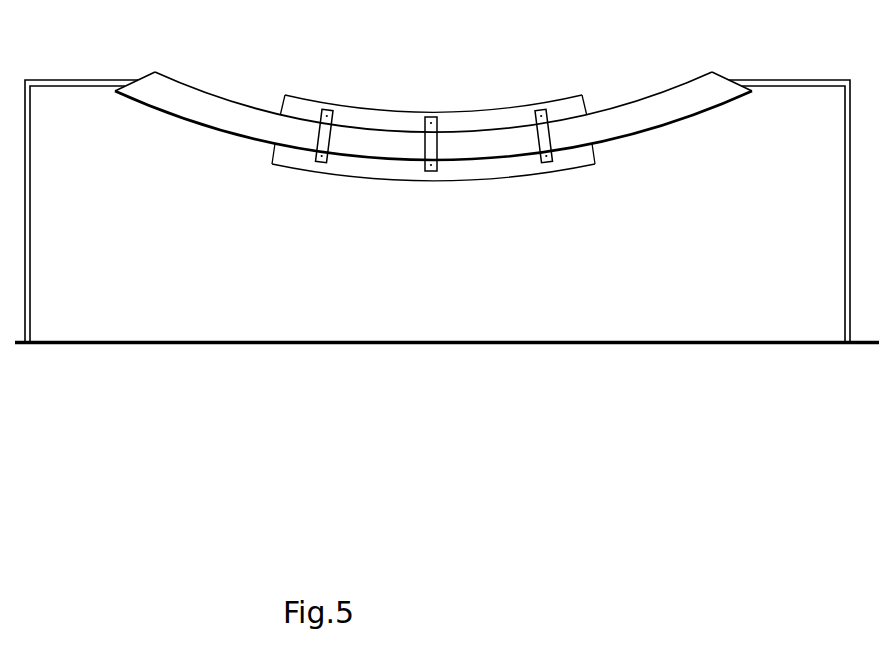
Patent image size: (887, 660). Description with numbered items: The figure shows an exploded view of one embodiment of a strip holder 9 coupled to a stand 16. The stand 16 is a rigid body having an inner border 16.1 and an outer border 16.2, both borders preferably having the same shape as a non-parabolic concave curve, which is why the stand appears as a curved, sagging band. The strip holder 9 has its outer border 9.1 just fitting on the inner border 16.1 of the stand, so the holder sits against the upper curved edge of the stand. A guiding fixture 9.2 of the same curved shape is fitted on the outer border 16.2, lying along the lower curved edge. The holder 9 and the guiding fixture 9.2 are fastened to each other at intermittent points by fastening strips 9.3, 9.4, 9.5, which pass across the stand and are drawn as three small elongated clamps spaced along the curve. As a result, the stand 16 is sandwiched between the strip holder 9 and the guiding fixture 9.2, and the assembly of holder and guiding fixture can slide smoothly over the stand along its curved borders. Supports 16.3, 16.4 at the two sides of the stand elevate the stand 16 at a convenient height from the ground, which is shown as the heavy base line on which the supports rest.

The strip holder 9 is at (434, 91).
The outer border of strip holder 9.1 is at (575, 102).
The guiding fixture 9.2 is at (385, 186).
The fastening strip 9.3 is at (548, 172).
The fastening strip 9.4 is at (431, 180).
The fastening strip 9.5 is at (318, 172).
The stand 16 is at (426, 96).
The inner border of stand 16.1 is at (186, 77).
The outer border of stand 16.2 is at (132, 106).
The support 16.3 is at (789, 210).
The support 16.4 is at (81, 210).